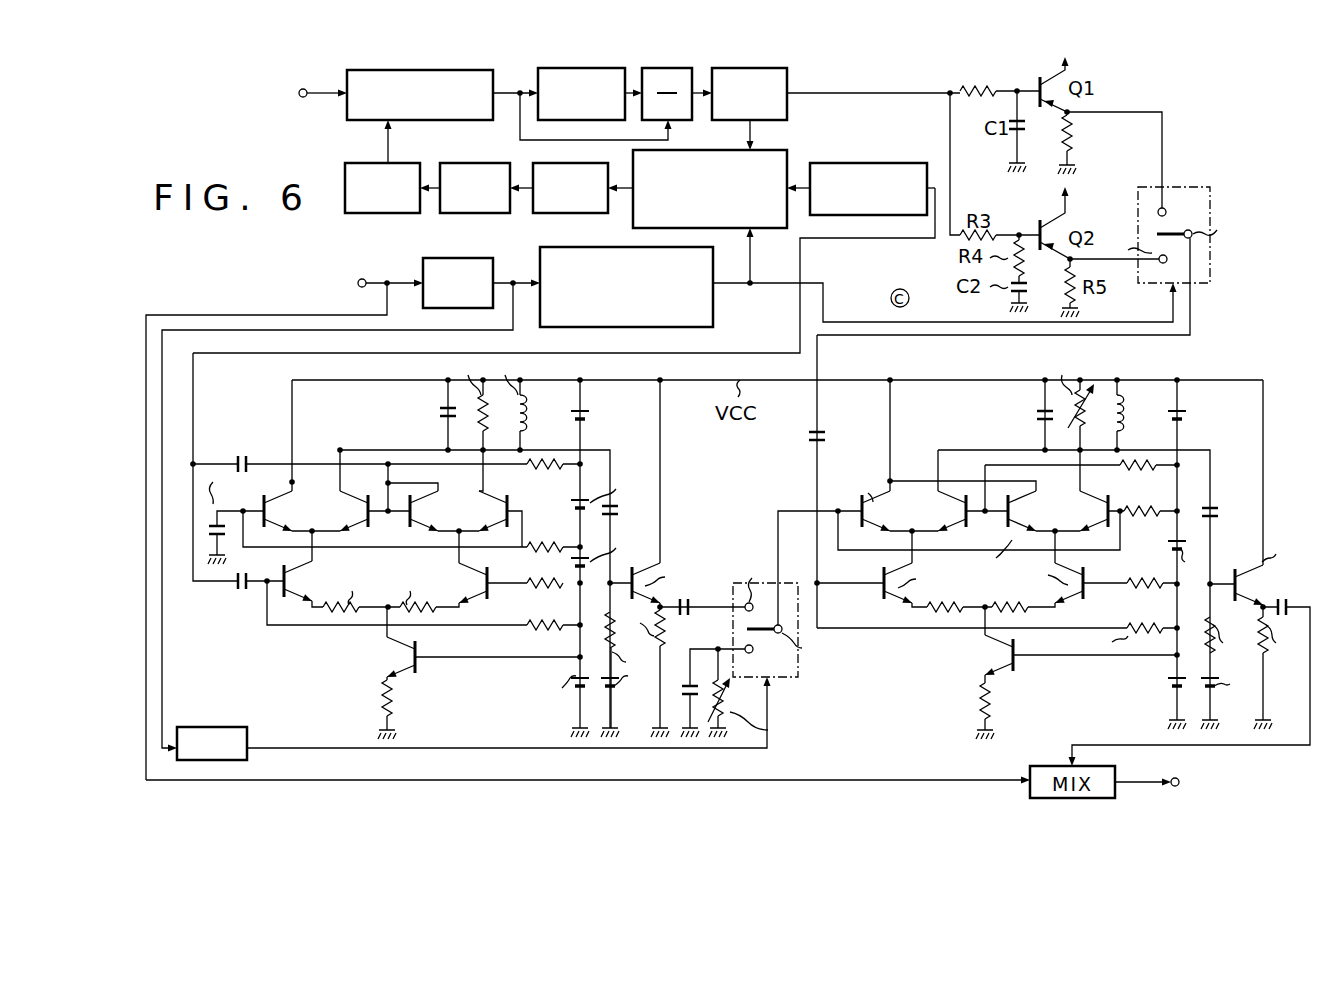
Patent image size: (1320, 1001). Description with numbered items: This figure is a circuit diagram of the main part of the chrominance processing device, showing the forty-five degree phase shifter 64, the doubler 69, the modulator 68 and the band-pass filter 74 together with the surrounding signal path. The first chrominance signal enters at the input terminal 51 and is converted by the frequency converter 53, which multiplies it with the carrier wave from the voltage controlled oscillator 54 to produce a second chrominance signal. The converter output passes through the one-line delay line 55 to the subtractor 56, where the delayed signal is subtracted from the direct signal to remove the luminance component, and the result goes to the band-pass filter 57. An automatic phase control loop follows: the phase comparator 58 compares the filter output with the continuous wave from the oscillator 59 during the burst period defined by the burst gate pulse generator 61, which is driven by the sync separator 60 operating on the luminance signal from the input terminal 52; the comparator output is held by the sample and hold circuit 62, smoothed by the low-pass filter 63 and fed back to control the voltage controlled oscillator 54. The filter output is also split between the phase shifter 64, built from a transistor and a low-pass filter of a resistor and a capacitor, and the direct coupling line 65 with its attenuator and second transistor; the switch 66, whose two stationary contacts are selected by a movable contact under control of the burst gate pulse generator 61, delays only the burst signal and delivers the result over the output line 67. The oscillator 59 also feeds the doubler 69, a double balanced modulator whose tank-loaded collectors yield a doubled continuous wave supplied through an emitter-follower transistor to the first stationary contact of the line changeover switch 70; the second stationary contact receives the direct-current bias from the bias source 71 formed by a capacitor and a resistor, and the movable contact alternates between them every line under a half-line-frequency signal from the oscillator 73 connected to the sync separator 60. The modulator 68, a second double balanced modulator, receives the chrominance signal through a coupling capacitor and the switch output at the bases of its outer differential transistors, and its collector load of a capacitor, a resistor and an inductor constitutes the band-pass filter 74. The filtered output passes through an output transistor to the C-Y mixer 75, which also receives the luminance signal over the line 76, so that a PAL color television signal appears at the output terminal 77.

The input terminal 51 is at (303, 97).
The input terminal 52 is at (362, 279).
The frequency converter 53 is at (378, 120).
The voltage controlled oscillator 54 is at (393, 163).
The 1H delay line 55 is at (541, 80).
The subtractor 56 is at (688, 110).
The band-pass filter 57 is at (787, 108).
The phase comparator 58 is at (787, 155).
The 4.43-MHz oscillator 59 is at (870, 163).
The sync separator 60 is at (460, 258).
The burst gate pulse generator 61 is at (540, 250).
The sample and hold circuit 62 is at (572, 213).
The low-pass filter 63 is at (487, 148).
The 45° phase shifter 64 is at (1018, 86).
The direct coupling line 65 is at (952, 180).
The switch 66 is at (1193, 187).
The output line 67 is at (819, 356).
The modulator 68 is at (1037, 546).
The doubler 69 is at (298, 662).
The line changeover switch 70 is at (798, 667).
The bias source 71 is at (699, 663).
The oscillator 73 is at (217, 727).
The band-pass filter 74 is at (1108, 370).
The C-Y mixer 75 is at (1168, 573).
The line 76 is at (940, 780).
The output terminal 77 is at (1180, 781).